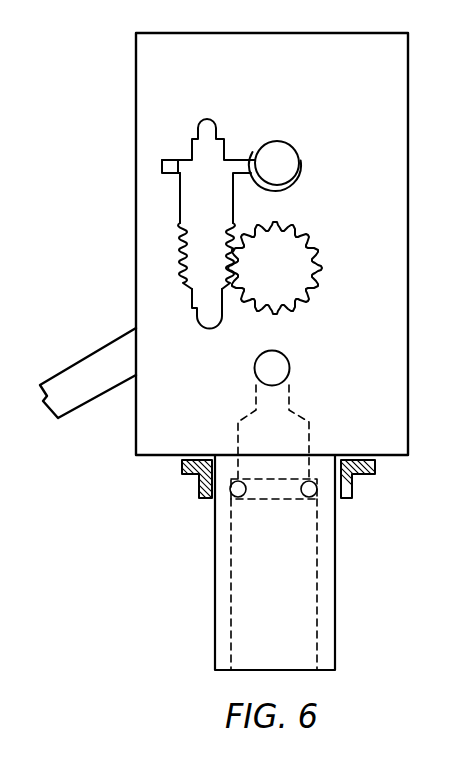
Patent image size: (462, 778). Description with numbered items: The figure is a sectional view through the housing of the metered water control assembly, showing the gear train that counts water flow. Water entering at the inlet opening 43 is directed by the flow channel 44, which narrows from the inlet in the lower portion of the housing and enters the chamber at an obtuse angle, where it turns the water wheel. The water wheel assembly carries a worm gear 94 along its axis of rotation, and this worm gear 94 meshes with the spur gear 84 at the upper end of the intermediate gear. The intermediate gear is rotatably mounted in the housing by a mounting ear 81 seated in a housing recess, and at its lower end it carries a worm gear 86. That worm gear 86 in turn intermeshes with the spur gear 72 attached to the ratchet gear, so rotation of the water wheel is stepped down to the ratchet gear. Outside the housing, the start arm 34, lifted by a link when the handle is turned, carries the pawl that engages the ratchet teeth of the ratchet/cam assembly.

The start arm 34 is at (73, 408).
The inlet opening 43 is at (270, 412).
The flow channel 44 is at (284, 362).
The spur gear 72 is at (305, 279).
The mounting ear 81 is at (206, 121).
The spur gear 84 is at (172, 164).
The worm gear 86 is at (181, 262).
The worm gear 94 is at (299, 170).